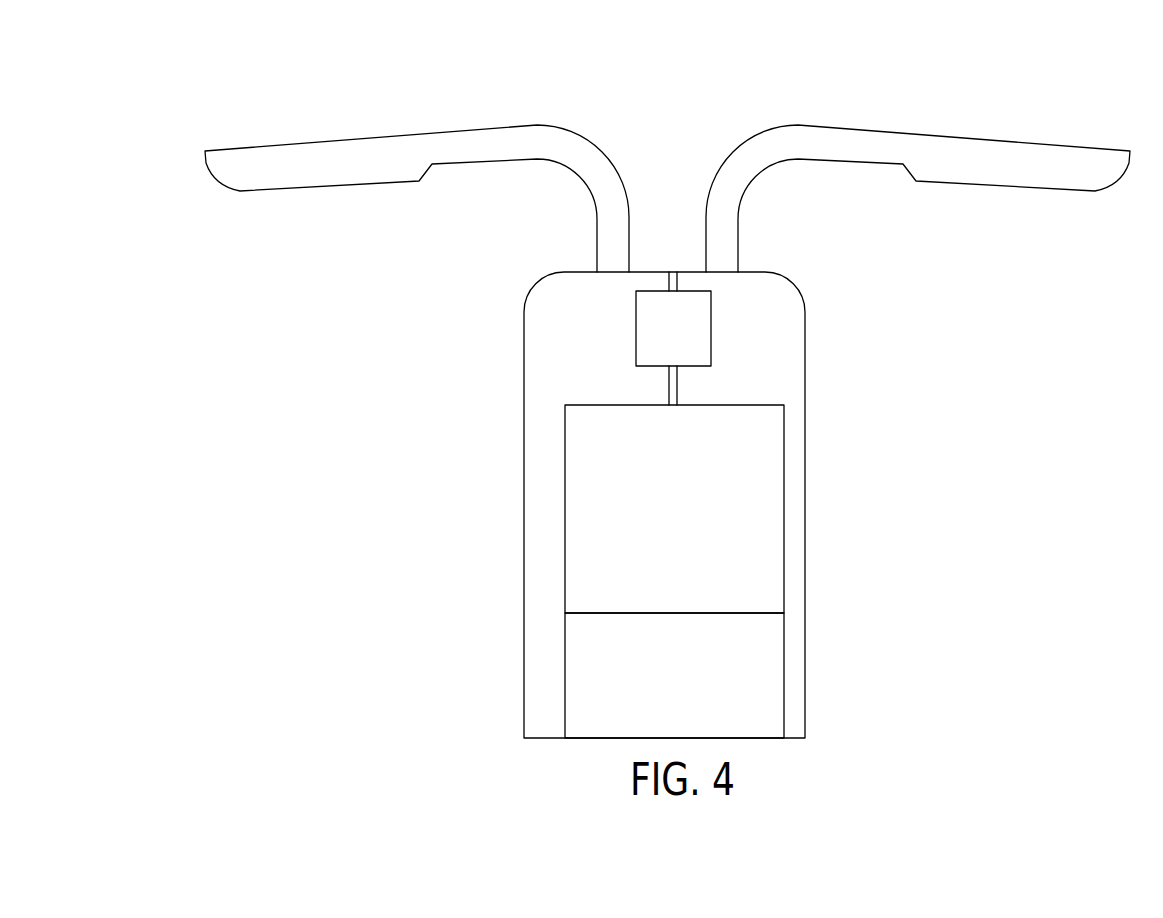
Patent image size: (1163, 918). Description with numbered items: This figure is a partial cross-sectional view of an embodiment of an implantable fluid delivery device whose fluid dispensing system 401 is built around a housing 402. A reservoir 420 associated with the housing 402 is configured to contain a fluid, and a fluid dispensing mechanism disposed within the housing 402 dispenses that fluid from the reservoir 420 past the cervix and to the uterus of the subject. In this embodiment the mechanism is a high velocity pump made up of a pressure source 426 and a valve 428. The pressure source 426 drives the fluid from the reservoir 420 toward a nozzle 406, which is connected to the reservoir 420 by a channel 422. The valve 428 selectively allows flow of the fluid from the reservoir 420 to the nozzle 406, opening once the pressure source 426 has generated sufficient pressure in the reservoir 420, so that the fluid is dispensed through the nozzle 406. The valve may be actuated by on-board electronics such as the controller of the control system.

The fluid dispensing system 401 is at (1082, 118).
The housing 402 is at (545, 440).
The nozzle 406 is at (673, 277).
The reservoir 420 is at (585, 593).
The channel 422 is at (672, 397).
The pressure source 426 is at (585, 695).
The valve 428 is at (675, 300).